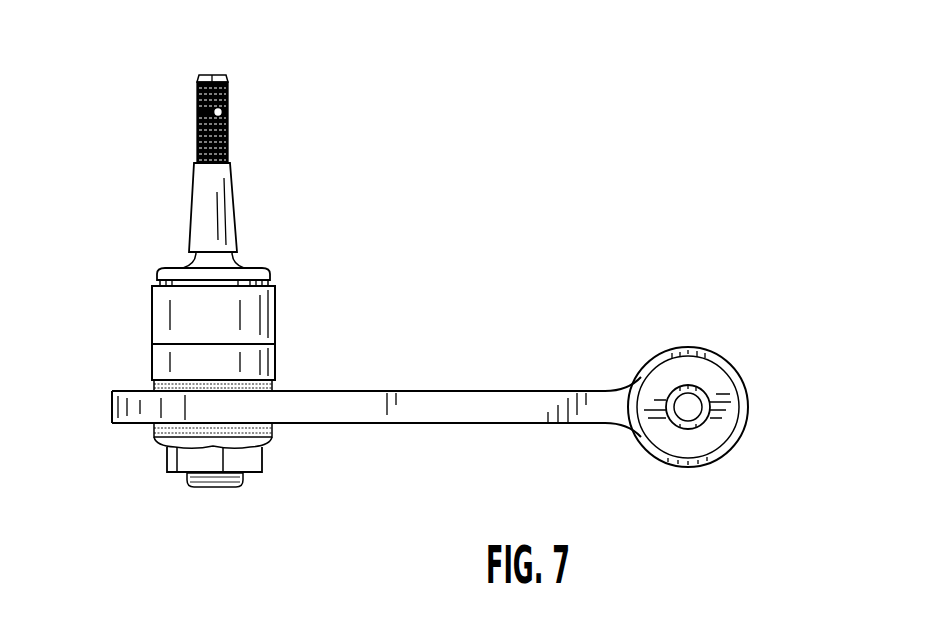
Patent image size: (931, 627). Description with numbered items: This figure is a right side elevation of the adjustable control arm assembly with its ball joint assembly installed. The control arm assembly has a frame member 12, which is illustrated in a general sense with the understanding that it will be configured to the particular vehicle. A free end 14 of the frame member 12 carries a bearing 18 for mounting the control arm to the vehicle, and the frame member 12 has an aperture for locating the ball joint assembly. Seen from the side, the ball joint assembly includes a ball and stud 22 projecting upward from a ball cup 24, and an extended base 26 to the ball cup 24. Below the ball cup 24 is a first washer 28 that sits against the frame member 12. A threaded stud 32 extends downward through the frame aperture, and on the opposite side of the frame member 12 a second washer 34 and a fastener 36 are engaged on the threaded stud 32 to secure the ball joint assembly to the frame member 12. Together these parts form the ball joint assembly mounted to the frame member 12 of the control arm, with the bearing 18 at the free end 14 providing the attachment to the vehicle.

The frame member 12 is at (472, 405).
The free end 14 is at (673, 347).
The bearing 18 is at (710, 378).
The ball and stud 22 is at (223, 213).
The ball cup 24 is at (133, 302).
The extended base 26 is at (160, 357).
The first washer 28 is at (272, 385).
The threaded stud 32 is at (210, 482).
The second washer 34 is at (276, 431).
The fastener 36 is at (254, 460).